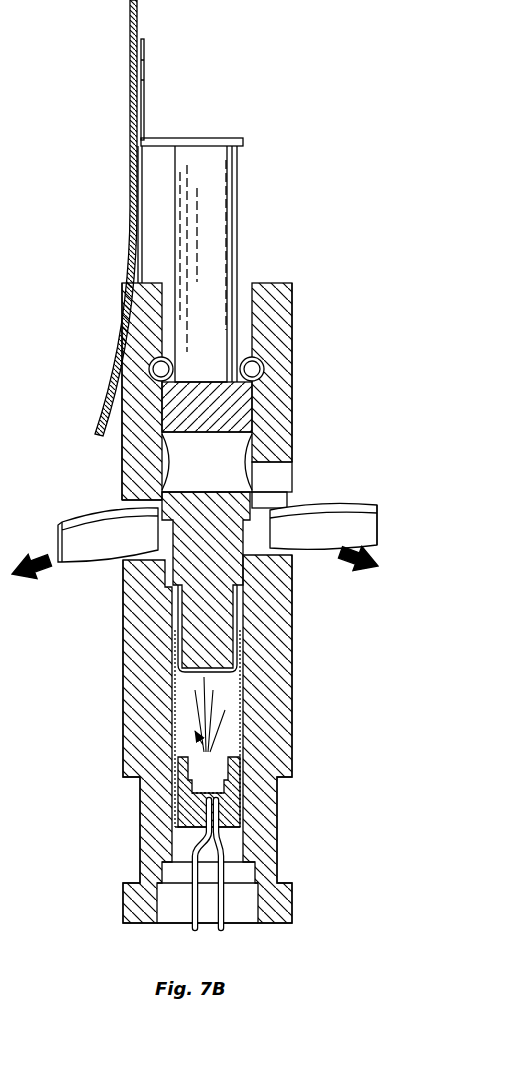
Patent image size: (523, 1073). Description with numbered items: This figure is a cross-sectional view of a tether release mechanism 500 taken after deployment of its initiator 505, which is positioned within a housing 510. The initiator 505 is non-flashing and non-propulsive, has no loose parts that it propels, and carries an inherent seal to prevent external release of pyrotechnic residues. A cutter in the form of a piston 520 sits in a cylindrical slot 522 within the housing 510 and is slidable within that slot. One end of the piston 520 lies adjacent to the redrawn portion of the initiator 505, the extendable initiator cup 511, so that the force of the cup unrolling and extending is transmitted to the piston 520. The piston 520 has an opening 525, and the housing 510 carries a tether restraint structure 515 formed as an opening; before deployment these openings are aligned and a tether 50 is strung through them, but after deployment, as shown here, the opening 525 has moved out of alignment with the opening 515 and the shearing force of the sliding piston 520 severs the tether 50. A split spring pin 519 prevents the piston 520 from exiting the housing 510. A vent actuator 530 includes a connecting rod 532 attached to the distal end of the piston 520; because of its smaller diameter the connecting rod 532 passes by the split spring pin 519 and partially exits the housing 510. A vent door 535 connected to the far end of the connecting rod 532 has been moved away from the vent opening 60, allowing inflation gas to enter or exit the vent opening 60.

The tether release mechanism 500 is at (290, 232).
The vent opening 60 is at (125, 172).
The vent door 535 is at (147, 88).
The vent actuator 530 is at (238, 108).
The connecting rod 532 is at (220, 164).
The cylindrical slot 522 is at (243, 296).
The split spring pin 519 is at (150, 367).
The opening in piston 525 is at (222, 452).
The cutter piston 520 is at (205, 497).
The housing 510 is at (272, 660).
The extendable initiator cup 511 is at (246, 716).
The initiator 505 is at (240, 790).
The tether restraint structure 515 is at (124, 556).
The tether 50 is at (323, 516).